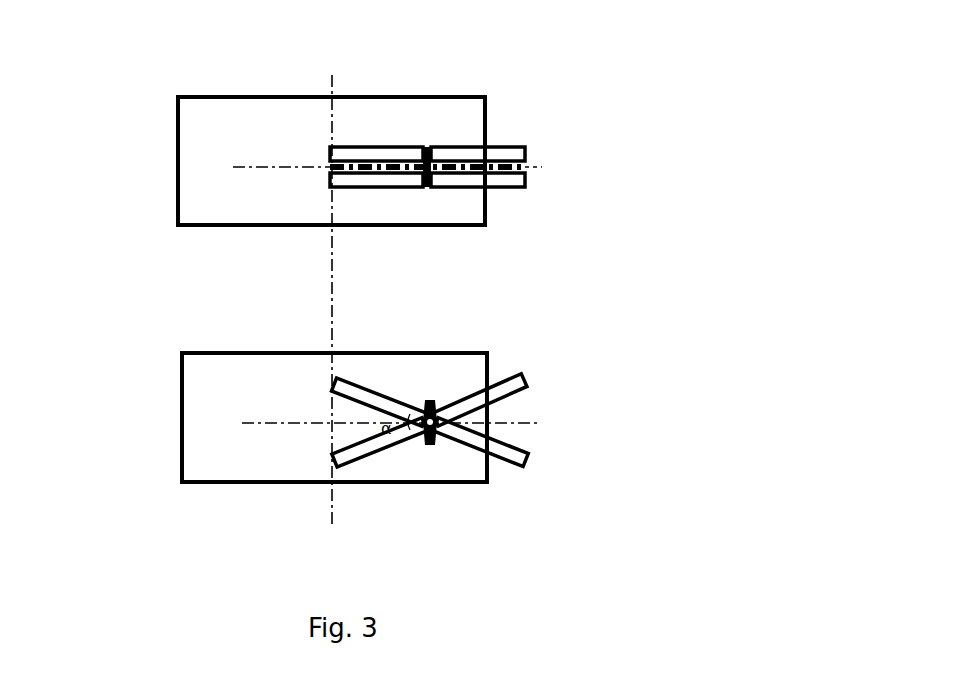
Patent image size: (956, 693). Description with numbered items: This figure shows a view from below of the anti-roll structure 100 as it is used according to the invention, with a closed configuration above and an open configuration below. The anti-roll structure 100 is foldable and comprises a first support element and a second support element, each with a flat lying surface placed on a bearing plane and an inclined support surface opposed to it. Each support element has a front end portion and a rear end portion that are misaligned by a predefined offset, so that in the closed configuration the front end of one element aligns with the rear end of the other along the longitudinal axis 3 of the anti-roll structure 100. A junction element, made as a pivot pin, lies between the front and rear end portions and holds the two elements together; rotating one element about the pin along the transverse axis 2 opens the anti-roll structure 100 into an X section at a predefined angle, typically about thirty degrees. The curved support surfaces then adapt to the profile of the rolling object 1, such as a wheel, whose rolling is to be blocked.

The rolling object 1 is at (170, 135).
The first axis 2 is at (327, 327).
The longitudinal axis 3 is at (240, 423).
The anti-roll structure 100 is at (643, 421).